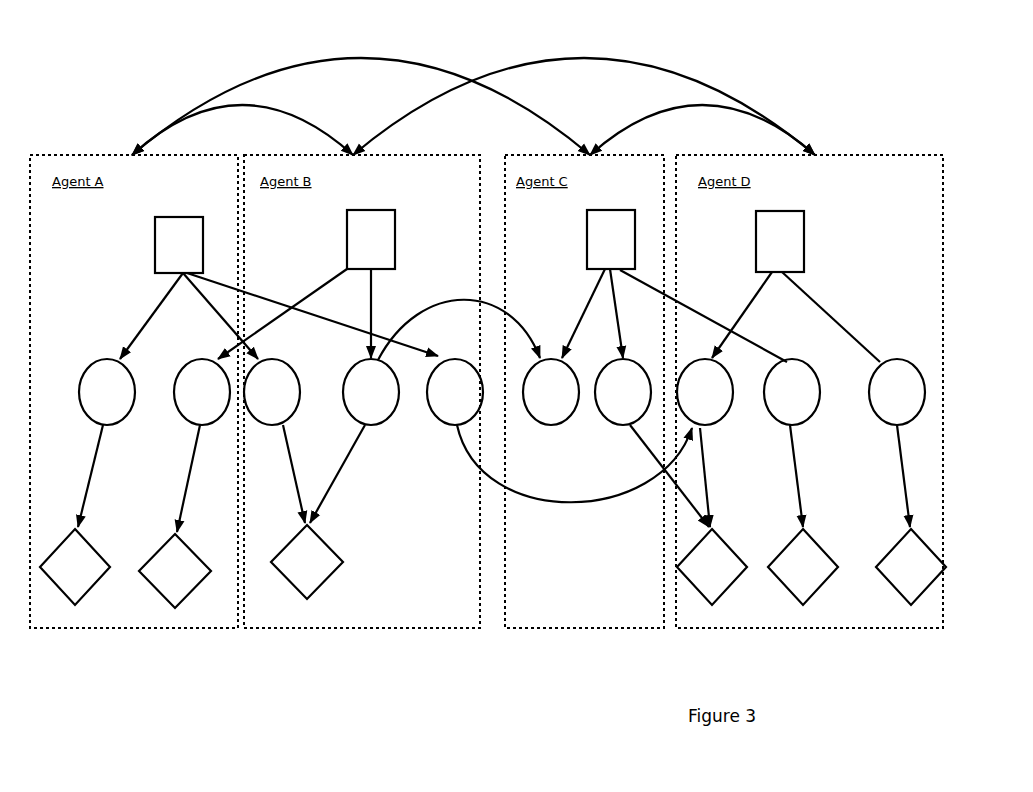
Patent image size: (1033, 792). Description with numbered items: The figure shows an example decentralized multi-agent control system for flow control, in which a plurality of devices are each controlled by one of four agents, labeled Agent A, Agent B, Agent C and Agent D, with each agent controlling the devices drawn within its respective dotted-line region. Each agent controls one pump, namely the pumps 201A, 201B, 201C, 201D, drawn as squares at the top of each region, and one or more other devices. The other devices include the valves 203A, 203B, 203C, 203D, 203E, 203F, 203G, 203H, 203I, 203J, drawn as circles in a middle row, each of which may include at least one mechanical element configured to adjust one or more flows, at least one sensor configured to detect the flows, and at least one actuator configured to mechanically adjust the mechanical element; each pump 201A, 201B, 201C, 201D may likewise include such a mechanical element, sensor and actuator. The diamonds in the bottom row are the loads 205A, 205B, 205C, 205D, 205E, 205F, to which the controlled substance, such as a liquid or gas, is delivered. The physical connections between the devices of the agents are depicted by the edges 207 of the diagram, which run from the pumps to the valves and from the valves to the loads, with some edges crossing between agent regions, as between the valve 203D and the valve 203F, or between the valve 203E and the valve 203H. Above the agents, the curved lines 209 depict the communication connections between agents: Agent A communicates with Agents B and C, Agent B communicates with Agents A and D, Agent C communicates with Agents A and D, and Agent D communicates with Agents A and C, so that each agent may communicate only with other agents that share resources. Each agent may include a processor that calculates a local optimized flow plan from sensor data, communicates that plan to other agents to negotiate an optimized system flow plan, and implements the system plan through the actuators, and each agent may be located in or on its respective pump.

The communication connection lines 209 is at (360, 58).
The edges 207 is at (822, 308).
The pump 201A is at (179, 245).
The pump 201B is at (371, 239).
The pump 201C is at (611, 239).
The pump 201D is at (780, 241).
The valve 203A is at (107, 392).
The valve 203B is at (202, 392).
The valve 203C is at (272, 392).
The valve 203D is at (371, 392).
The valve 203E is at (455, 392).
The valve 203F is at (551, 392).
The valve 203G is at (623, 392).
The valve 203H is at (705, 392).
The valve 203I is at (792, 392).
The valve 203J is at (897, 392).
The load 205A is at (75, 567).
The load 205B is at (175, 571).
The load 205C is at (307, 562).
The load 205D is at (712, 567).
The load 205E is at (803, 567).
The load 205F is at (911, 567).